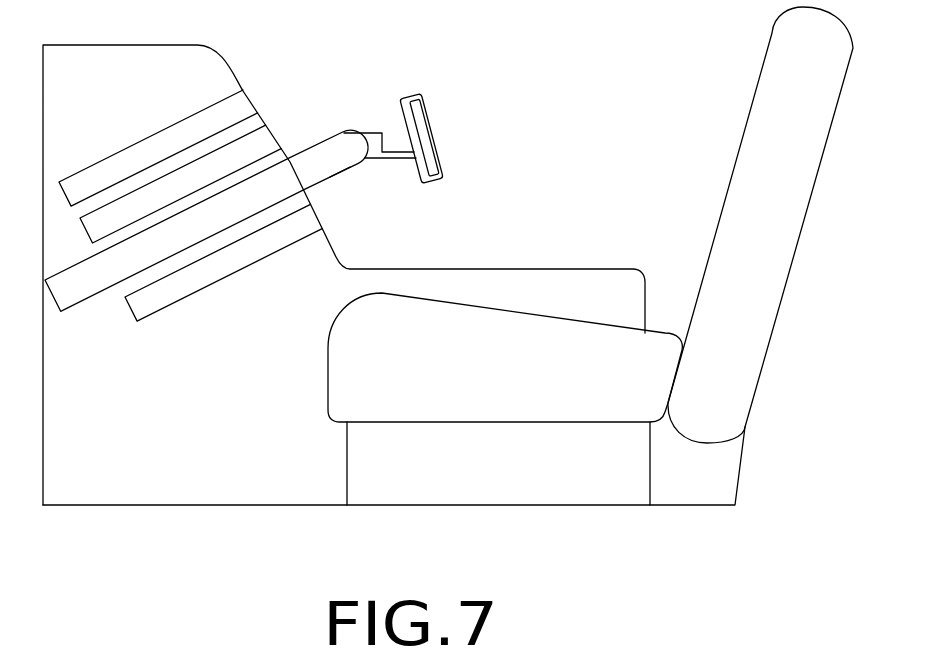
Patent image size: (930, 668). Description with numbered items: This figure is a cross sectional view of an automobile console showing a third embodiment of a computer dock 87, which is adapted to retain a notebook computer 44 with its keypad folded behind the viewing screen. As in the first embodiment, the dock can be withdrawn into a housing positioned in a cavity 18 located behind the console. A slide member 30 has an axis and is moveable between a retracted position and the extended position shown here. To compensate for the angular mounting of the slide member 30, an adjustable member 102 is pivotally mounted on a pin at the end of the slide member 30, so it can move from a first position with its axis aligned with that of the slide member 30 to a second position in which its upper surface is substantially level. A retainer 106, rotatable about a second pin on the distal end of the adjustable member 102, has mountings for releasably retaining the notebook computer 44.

The cavity 18 is at (77, 307).
The slide member 30 is at (320, 142).
The notebook computer 44 is at (431, 130).
The dock 87 is at (340, 172).
The adjustable member 102 is at (394, 151).
The retainer 106 is at (418, 93).